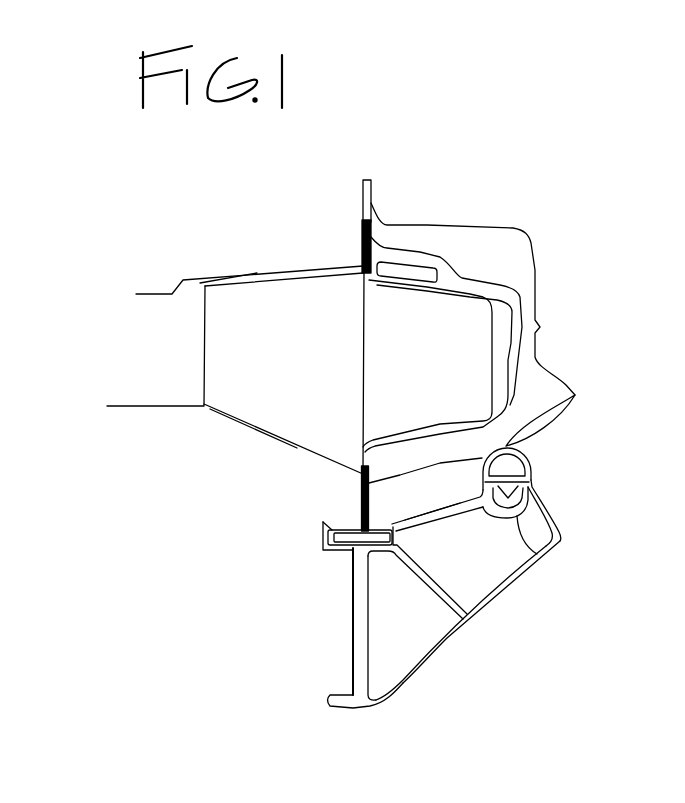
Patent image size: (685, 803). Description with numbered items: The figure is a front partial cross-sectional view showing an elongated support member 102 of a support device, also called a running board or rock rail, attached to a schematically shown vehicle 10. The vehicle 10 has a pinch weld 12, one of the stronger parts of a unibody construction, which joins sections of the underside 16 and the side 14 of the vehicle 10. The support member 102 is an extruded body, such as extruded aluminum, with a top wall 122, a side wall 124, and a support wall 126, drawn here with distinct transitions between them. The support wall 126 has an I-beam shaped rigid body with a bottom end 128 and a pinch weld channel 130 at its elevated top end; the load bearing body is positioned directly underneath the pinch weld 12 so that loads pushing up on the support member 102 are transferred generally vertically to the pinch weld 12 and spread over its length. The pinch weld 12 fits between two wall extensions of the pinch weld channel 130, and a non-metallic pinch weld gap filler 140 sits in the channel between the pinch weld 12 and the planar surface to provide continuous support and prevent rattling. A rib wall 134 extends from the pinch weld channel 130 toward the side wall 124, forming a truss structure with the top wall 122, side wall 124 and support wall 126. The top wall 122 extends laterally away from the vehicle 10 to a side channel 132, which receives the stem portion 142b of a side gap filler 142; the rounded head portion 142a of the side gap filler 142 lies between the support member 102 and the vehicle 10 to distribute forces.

The vehicle 10 is at (359, 474).
The pinch weld 12 is at (285, 355).
The side of the vehicle 14 is at (499, 343).
The underside of the vehicle 16 is at (198, 374).
The support member 102 is at (434, 578).
The top wall 122 is at (423, 439).
The side wall 124 is at (487, 620).
The support wall 126 is at (294, 624).
The bottom end 128 is at (345, 740).
The pinch weld channel 130 is at (301, 566).
The side channel 132 is at (525, 507).
The rib wall 134 is at (424, 646).
The pinch weld gap filler 140 is at (295, 526).
The side gap filler 142 is at (571, 491).
The head portion 142a is at (595, 415).
The stem portion 142b is at (590, 547).